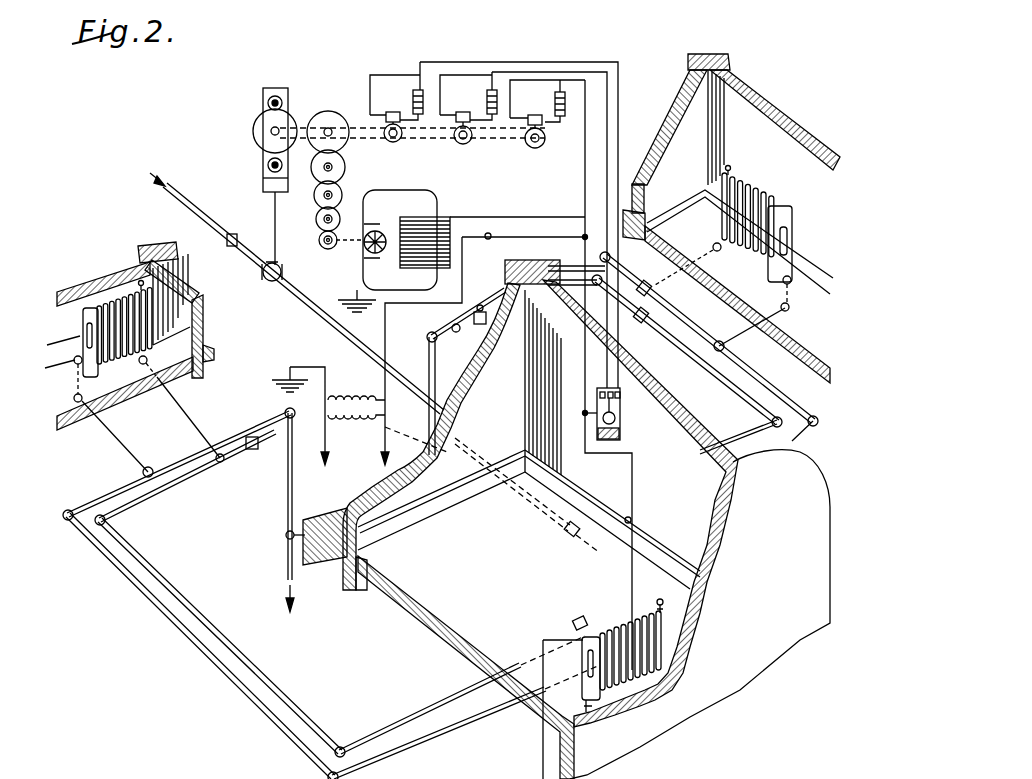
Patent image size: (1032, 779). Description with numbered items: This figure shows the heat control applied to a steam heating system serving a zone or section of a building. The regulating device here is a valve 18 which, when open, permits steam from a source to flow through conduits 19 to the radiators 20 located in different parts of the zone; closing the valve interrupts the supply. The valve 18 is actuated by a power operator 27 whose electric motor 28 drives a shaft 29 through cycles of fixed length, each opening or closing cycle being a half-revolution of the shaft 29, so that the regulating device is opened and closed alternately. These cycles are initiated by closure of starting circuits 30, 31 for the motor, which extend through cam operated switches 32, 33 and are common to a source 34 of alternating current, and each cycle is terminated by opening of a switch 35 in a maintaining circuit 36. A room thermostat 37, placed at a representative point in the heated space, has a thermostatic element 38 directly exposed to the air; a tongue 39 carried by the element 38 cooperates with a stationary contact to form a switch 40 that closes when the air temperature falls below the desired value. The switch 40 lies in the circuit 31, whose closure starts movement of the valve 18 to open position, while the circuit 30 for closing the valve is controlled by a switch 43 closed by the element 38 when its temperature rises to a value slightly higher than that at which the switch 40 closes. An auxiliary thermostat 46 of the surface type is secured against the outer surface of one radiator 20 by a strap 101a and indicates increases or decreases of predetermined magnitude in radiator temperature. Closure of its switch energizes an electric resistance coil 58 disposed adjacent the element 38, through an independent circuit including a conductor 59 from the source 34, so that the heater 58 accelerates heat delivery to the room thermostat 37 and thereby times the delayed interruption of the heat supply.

The valve 18 is at (292, 271).
The conduits 19 is at (332, 325).
The radiators 20 is at (110, 290).
The power operator 27 is at (385, 182).
The electric motor 28 is at (427, 206).
The shaft 29 is at (440, 140).
The starting circuit 30 is at (562, 71).
The starting circuit 31 is at (452, 63).
The cam operated switch 32 is at (485, 108).
The cam operated switch 33 is at (412, 106).
The source of alternating current 34 is at (370, 395).
The switch 35 is at (554, 110).
The maintaining circuit 36 is at (527, 220).
The thermostat 37 is at (626, 430).
The thermostatic element 38 is at (616, 420).
The tongue 39 is at (613, 410).
The switch 40 is at (600, 375).
The switch 43 is at (603, 385).
The auxiliary thermostat 46 is at (660, 658).
The electric resistance coil 58 is at (608, 541).
The conductor 59 is at (488, 239).
The strap 101a is at (620, 620).